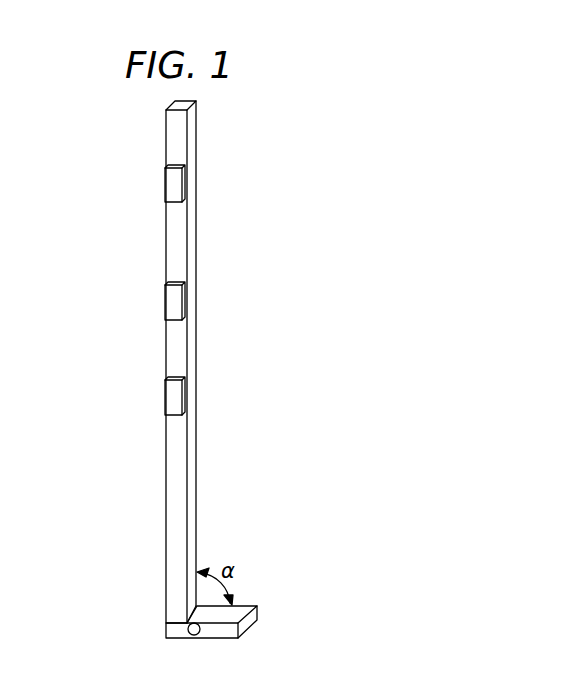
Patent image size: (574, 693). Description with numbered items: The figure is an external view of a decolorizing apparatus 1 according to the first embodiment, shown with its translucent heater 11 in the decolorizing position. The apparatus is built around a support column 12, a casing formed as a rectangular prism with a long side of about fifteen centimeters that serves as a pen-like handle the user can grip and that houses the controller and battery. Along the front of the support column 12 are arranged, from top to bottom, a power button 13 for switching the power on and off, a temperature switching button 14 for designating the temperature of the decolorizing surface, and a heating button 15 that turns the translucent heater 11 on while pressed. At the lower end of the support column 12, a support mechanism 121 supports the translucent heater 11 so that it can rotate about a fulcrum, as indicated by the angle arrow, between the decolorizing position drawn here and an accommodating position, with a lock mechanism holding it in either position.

The decolorizing apparatus 1 is at (148, 258).
The translucent heater 11 is at (241, 605).
The support column 12 is at (177, 241).
The support mechanism 121 is at (188, 629).
The power button 13 is at (175, 183).
The temperature switching button 14 is at (175, 303).
The heating button 15 is at (175, 398).